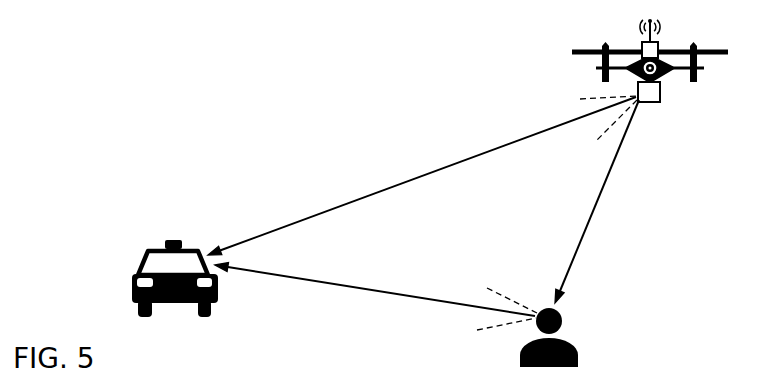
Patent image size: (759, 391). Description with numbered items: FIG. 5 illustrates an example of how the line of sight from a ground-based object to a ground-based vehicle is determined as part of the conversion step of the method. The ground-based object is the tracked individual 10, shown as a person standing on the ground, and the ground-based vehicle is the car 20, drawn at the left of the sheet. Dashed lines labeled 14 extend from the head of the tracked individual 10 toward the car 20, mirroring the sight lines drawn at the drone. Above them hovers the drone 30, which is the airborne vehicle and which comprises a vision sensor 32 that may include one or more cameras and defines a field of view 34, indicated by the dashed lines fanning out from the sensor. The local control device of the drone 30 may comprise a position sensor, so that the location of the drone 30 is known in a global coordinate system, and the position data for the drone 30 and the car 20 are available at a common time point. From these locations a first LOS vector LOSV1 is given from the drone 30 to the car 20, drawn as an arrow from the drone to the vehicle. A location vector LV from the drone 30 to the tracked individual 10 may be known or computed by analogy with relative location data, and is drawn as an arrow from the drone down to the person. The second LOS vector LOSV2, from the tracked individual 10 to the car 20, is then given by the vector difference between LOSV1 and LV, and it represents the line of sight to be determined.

The tracked individual 10 is at (573, 344).
The user line of sight 14 is at (498, 293).
The car 20 is at (158, 243).
The drone 30 is at (607, 68).
The vision sensor 32 is at (660, 100).
The field of view 34 is at (594, 99).
The first LOS vector LOSV1 is at (447, 166).
The second LOS vector LOSV2 is at (350, 286).
The location vector LV is at (593, 212).